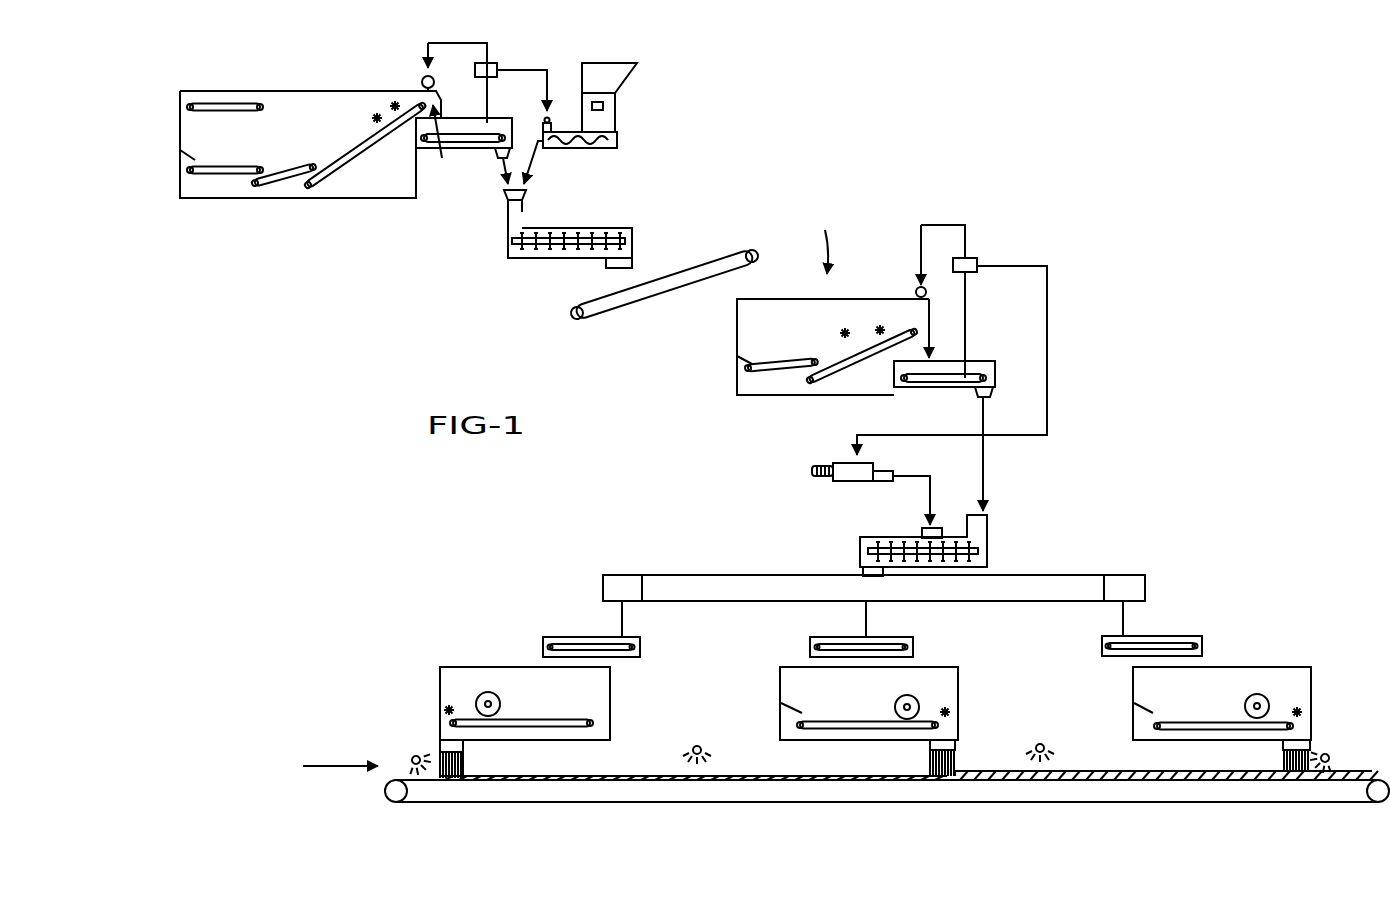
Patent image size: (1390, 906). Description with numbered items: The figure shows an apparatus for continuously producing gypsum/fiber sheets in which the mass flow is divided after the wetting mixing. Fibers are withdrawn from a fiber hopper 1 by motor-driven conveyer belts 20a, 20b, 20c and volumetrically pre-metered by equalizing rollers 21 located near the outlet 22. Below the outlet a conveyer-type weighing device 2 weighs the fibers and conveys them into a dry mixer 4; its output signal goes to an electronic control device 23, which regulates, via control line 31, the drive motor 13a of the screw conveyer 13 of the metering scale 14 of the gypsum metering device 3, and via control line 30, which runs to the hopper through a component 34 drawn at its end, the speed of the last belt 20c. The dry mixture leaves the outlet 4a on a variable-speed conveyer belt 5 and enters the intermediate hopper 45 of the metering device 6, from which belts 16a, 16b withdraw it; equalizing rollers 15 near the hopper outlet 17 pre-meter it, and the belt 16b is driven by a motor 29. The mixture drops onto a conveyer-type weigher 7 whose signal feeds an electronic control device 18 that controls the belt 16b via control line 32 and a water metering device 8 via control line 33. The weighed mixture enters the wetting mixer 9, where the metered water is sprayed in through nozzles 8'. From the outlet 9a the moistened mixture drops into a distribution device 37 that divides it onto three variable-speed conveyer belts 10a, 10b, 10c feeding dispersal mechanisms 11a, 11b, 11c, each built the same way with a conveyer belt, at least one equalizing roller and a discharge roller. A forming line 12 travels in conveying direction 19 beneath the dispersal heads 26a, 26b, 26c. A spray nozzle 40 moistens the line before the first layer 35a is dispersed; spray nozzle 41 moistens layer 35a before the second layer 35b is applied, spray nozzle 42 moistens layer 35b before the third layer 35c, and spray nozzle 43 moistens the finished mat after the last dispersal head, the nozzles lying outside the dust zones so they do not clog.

The fiber bin or hopper 1 is at (314, 97).
The weighing device 2 is at (470, 142).
The device for measuring out gypsum 3 is at (621, 77).
The dry mixer 4 is at (579, 230).
The outlet 4a is at (628, 234).
The conveyer belt 5 is at (667, 294).
The device for measuring out gypsum and fibers 6 is at (820, 239).
The conveyer-type weigher 7 is at (996, 378).
The device for measuring out water 8 is at (871, 494).
The nozzles 8' is at (912, 514).
The wetting mixer 9 is at (858, 550).
The outlet 9a is at (860, 571).
The conveyer belt 10a is at (642, 643).
The conveyer belt 10b is at (810, 643).
The conveyer belt 10c is at (1102, 641).
The dispersal mechanism 11a is at (611, 703).
The dispersal mechanism 11b is at (960, 701).
The dispersal mechanism 11c is at (1312, 702).
The forming line 12 is at (757, 787).
The screw conveyer 13 is at (589, 143).
The drive motor 13a is at (544, 122).
The metering scale 14 is at (617, 121).
The equalizing rollers 15 is at (878, 322).
The conveyer belt 16a is at (773, 362).
The conveyer belt 16b is at (845, 360).
The hopper outlet 17 is at (933, 332).
The electronic control device 18 is at (975, 272).
The conveying direction 19 is at (330, 766).
The conveyer belt 20a is at (227, 163).
The conveyer belt 20b is at (290, 163).
The conveyer belt 20c is at (357, 148).
The equalizing rollers 21 is at (392, 101).
The outlet 22 is at (448, 144).
The electronic control device 23 is at (497, 64).
The dispersal head 26a is at (465, 748).
The dispersal head 26b is at (930, 746).
The dispersal head 26c is at (1285, 748).
The motor 29 is at (915, 290).
The control line 30 is at (425, 55).
The control line 31 is at (547, 66).
The control line 32 is at (967, 236).
The control line 33 is at (1047, 310).
The valve 34 is at (433, 80).
The first layer 35a is at (568, 778).
The second layer 35b is at (988, 773).
The third layer 35c is at (1335, 777).
The distribution device 37 is at (720, 580).
The spray nozzle 40 is at (411, 754).
The spray nozzle 41 is at (697, 742).
The spray nozzle 42 is at (1045, 738).
The spray nozzle 43 is at (1328, 755).
The intermediate hopper 45 is at (815, 298).